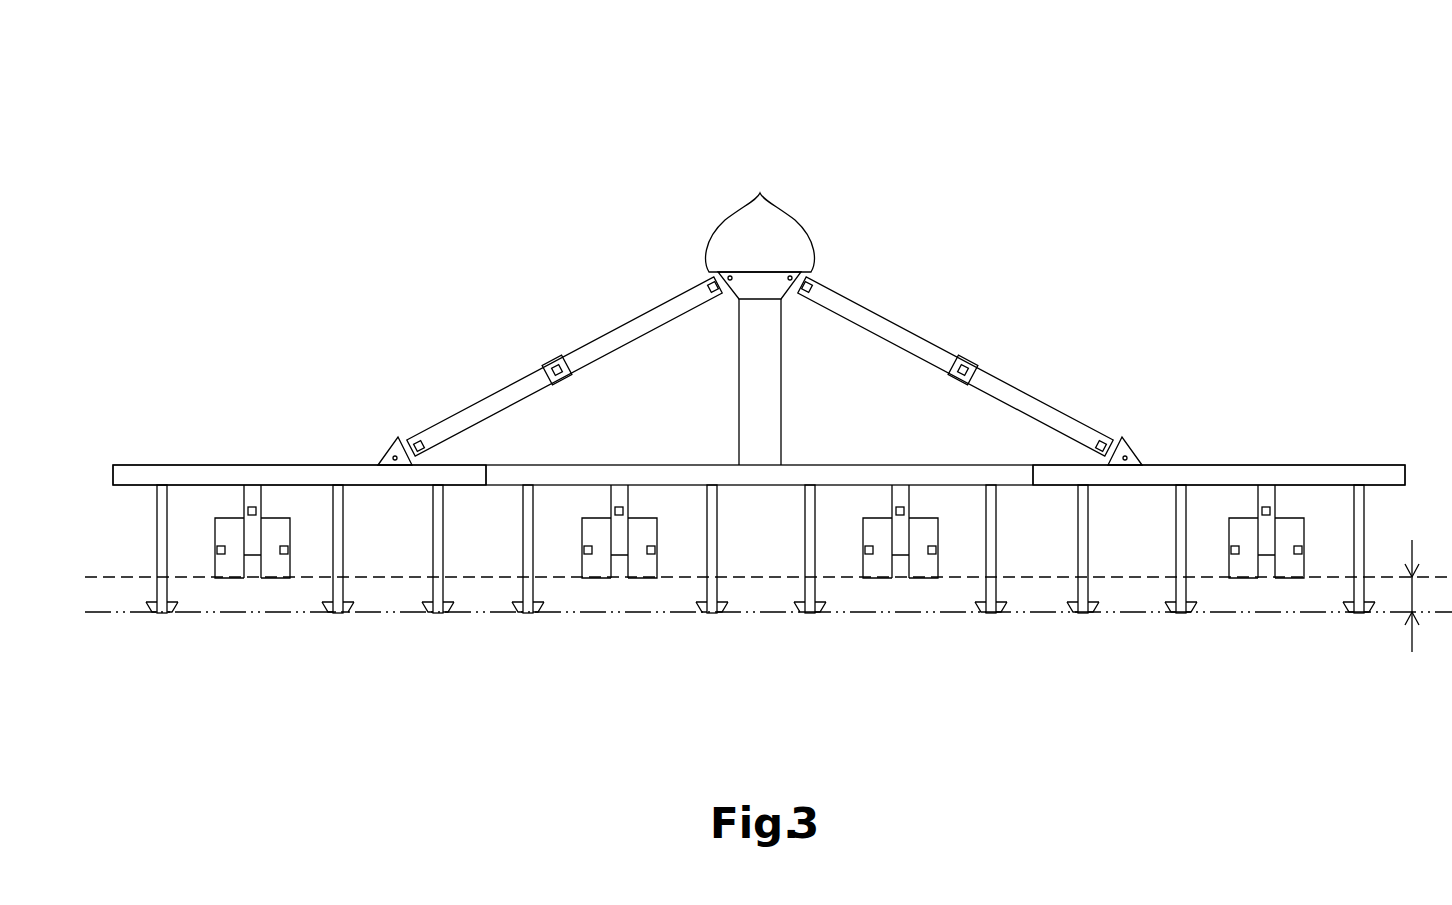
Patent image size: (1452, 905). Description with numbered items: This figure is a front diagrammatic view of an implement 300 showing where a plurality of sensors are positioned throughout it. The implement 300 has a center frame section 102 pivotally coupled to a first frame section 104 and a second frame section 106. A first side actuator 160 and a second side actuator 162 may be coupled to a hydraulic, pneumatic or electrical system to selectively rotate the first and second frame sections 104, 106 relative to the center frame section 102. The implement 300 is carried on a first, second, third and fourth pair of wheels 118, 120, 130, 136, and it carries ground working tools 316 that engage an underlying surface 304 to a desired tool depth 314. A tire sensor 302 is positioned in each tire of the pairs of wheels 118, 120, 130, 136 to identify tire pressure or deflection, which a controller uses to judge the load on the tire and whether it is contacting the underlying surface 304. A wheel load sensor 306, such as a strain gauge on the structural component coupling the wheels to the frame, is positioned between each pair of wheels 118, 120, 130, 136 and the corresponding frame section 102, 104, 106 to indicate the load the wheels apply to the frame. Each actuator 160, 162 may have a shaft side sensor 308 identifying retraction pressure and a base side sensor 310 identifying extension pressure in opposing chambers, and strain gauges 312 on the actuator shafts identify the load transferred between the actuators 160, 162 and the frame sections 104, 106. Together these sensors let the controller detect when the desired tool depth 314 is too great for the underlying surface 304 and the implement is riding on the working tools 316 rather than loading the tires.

The implement 300 is at (1047, 150).
The center frame section 102 is at (758, 475).
The first frame section 104 is at (138, 470).
The second frame section 106 is at (1345, 470).
The base side sensor 310 is at (760, 193).
The first side actuator 160 is at (656, 315).
The second side actuator 162 is at (866, 315).
The shaft side sensor 308 is at (553, 358).
The strain gauge 312 is at (418, 438).
The working tools 316 is at (162, 613).
The tire sensor 302 is at (221, 554).
The wheel load sensor 306 is at (253, 506).
The third pair of wheels 130 is at (229, 600).
The second pair of wheels 120 is at (597, 600).
The first pair of wheels 118 is at (922, 600).
The fourth pair of wheels 136 is at (1288, 600).
The underlying surface 304 is at (1437, 577).
The desired tool depth 314 is at (1412, 652).